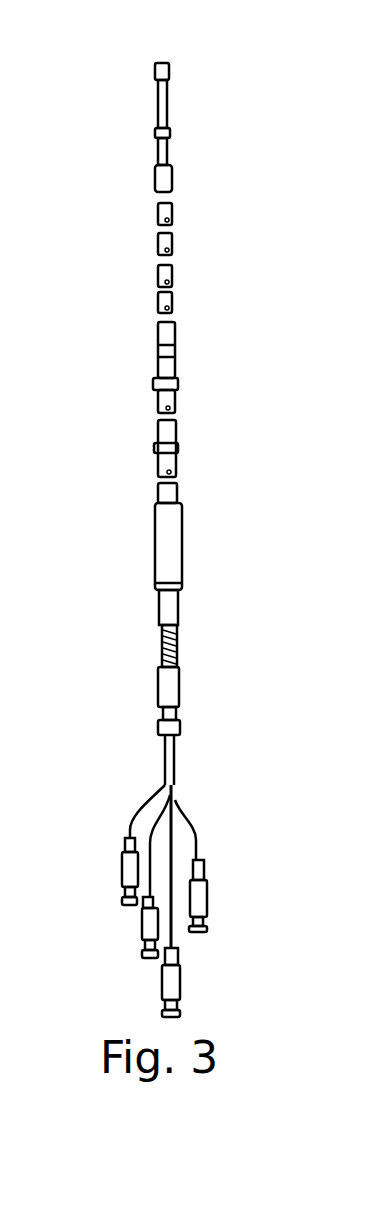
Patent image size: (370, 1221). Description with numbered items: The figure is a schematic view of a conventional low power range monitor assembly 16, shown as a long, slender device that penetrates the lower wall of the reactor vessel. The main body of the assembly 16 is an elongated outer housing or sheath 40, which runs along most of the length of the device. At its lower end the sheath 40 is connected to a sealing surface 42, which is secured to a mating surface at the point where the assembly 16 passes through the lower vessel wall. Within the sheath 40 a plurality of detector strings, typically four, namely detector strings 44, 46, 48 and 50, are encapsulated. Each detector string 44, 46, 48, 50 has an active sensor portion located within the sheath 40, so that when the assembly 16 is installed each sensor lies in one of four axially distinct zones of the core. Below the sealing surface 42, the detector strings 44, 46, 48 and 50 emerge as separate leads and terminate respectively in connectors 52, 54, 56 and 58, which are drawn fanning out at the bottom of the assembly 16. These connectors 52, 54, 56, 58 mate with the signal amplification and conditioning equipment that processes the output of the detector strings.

The LPRM assembly 16 is at (108, 108).
The outer housing or sheath 40 is at (153, 383).
The sealing surface 42 is at (155, 596).
The detector string 44 is at (158, 303).
The detector string 46 is at (158, 282).
The detector string 48 is at (158, 252).
The detector string 50 is at (158, 222).
The connector 52 is at (122, 868).
The connector 54 is at (142, 930).
The connector 56 is at (182, 983).
The connector 58 is at (207, 890).